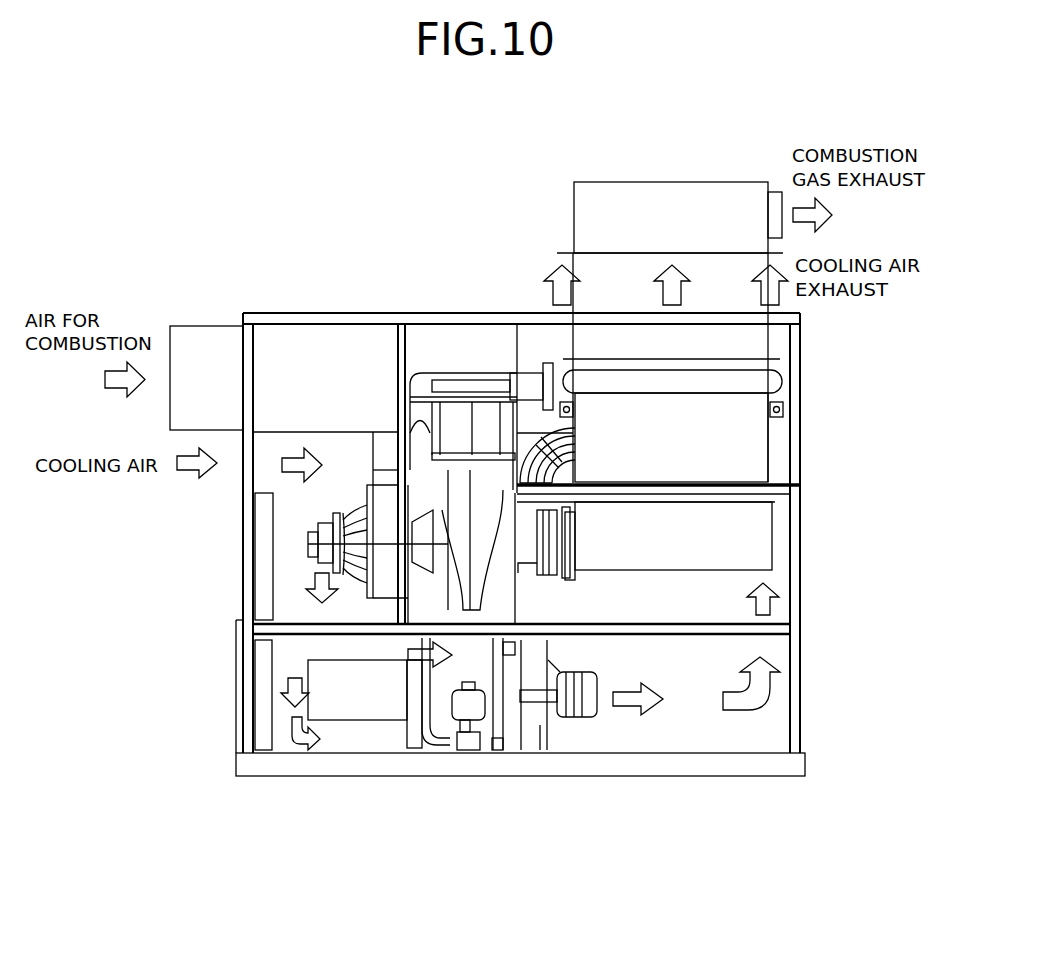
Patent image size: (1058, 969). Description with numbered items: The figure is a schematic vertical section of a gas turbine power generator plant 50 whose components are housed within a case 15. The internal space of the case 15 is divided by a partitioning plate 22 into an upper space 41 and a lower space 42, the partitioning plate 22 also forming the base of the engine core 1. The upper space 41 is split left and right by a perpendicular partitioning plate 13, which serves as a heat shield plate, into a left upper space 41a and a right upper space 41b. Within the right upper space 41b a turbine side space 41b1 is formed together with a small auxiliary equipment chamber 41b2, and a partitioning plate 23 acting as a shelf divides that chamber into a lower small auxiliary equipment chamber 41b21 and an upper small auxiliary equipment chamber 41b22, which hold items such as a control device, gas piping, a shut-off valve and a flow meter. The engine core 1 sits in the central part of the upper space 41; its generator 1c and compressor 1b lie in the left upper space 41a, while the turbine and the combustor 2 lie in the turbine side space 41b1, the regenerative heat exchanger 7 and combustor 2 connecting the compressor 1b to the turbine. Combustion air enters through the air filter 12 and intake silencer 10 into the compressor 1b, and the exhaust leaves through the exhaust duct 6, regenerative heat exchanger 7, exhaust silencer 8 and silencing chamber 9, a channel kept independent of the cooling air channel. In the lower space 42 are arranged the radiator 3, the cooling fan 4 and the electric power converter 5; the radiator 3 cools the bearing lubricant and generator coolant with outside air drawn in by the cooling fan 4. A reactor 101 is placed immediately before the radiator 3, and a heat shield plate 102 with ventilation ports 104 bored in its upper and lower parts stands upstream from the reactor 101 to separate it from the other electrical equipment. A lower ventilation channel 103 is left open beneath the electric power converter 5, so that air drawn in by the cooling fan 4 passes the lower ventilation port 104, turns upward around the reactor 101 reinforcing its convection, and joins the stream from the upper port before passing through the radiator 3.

The gas turbine power generator plant 50 is at (296, 252).
The case 15 is at (795, 615).
The air filter 12 is at (191, 333).
The intake silencer 10 is at (342, 340).
The partitioning plate 13 is at (416, 343).
The right upper space 41b is at (450, 345).
The turbine side space 41b1 is at (530, 345).
The silencing chamber 9 is at (675, 202).
The exhaust silencer 8 is at (755, 347).
The regenerative heat exchanger 7 is at (735, 429).
The upper small auxiliary equipment chamber 41b22 is at (780, 471).
The lower small auxiliary equipment chamber 41b21 is at (780, 512).
The partitioning plate 23 is at (690, 488).
The exhaust duct 6 is at (745, 549).
The small auxiliary equipment chamber 41b2 is at (725, 586).
The combustor 2 is at (486, 415).
The engine core 1 is at (455, 512).
The generator 1c is at (302, 528).
The compressor 1b is at (382, 590).
The upper space 41 is at (285, 597).
The left upper space 41a is at (283, 540).
The partitioning plate 22 is at (295, 632).
The lower space 42 is at (278, 735).
The lower ventilation channel 103 is at (332, 740).
The electric power converter 5 is at (335, 713).
The ventilation ports 104 is at (425, 745).
The heat shield plate 102 is at (422, 697).
The reactor 101 is at (468, 748).
The radiator 3 is at (510, 748).
The cooling fan 4 is at (588, 735).